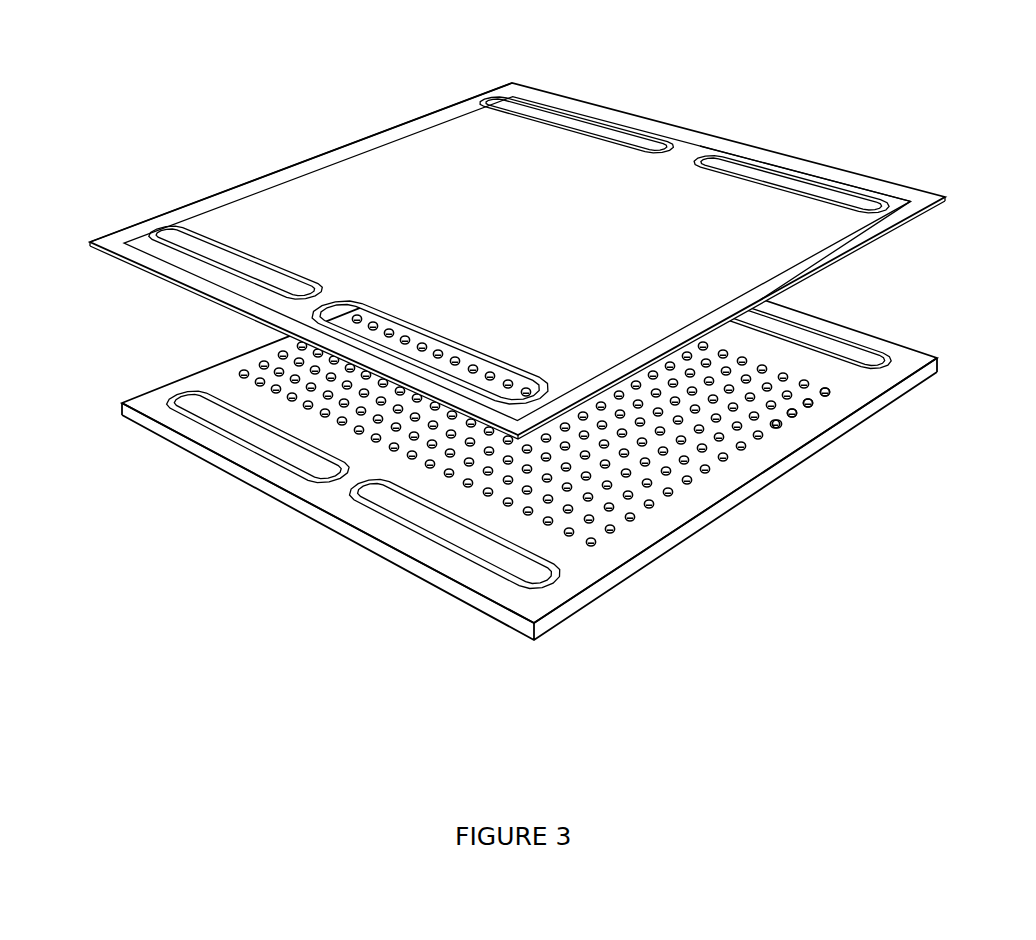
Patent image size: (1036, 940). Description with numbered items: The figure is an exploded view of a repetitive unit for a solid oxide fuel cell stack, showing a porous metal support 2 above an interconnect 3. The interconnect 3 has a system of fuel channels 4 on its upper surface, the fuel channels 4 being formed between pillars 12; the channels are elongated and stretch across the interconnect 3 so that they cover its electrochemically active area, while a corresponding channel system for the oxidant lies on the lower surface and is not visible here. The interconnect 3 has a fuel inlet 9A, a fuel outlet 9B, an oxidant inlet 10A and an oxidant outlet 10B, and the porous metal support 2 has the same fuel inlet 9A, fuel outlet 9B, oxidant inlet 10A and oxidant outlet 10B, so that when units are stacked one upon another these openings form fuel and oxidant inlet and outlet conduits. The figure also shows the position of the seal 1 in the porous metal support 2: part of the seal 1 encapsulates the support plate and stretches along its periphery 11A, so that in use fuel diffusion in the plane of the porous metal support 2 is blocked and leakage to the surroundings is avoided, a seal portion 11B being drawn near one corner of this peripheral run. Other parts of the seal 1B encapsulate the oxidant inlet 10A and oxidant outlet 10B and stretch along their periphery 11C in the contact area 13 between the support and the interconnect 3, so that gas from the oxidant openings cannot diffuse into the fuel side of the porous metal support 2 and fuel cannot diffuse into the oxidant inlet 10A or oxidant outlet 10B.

The seal 1 is at (245, 182).
The seal parts encapsulating oxidant inlet and outlet 1B is at (485, 100).
The porous metal support 2 is at (370, 173).
The interconnect 3 is at (322, 553).
The fuel channels 4 is at (730, 447).
The fuel inlet 9A is at (223, 268).
The fuel outlet 9B is at (840, 190).
The oxidant inlet 10A is at (490, 555).
The oxidant outlet 10B is at (597, 125).
The periphery 11A is at (713, 133).
The seal corner portion 11B is at (900, 183).
The periphery of oxidant inlet and outlet 11C is at (553, 96).
The pillars 12 is at (778, 428).
The contact area 13 is at (590, 565).